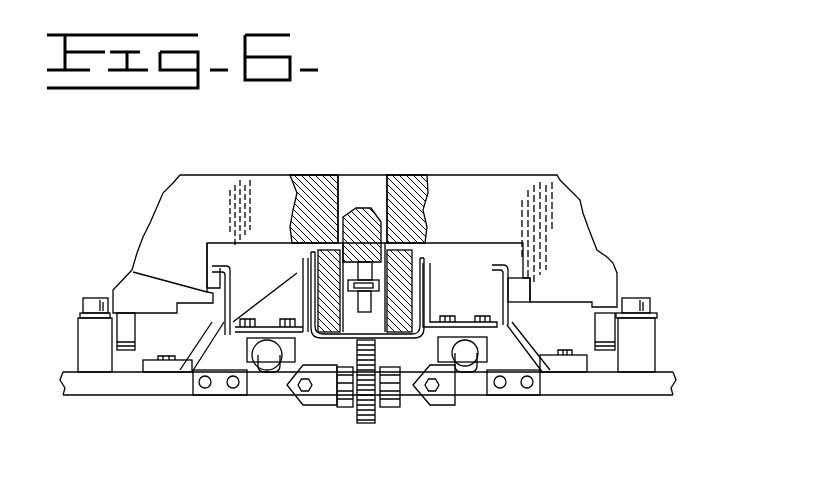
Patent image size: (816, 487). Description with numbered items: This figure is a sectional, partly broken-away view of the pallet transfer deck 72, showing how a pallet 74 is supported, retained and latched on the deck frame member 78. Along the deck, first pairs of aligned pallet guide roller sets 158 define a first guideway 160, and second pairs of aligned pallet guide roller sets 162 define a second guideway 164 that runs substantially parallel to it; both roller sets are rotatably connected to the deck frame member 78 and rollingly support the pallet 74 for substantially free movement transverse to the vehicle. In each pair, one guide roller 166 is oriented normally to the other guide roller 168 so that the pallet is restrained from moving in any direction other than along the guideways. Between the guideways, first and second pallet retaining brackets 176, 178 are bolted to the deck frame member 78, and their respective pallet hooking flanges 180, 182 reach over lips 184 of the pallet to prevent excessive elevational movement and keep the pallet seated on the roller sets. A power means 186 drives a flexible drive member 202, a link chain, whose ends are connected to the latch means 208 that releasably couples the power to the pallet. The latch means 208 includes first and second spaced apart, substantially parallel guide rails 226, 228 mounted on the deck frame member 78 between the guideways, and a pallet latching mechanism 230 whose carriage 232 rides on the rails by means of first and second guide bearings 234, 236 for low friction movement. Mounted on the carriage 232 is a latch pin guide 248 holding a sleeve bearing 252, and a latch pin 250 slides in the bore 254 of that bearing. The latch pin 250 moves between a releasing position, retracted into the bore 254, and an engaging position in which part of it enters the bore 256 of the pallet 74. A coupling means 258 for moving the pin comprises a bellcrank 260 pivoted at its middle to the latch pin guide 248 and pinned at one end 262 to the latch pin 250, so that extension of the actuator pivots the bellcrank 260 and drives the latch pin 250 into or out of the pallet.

The pallet transfer deck 72 is at (45, 327).
The pallet 74 is at (557, 192).
The deck frame member 78 is at (663, 383).
The first pairs of aligned pallet guide roller sets 158 is at (655, 347).
The first guideway 160 is at (650, 286).
The second pairs of aligned pallet guide roller sets 162 is at (122, 303).
The second guideway 164 is at (90, 335).
The guide roller 166 is at (86, 300).
The guide roller 168 is at (127, 332).
The first pallet retaining bracket 176 is at (505, 292).
The second pallet retaining bracket 178 is at (231, 287).
The pallet hooking flange 180 is at (482, 283).
The pallet hooking flange 182 is at (213, 317).
The lips 184 is at (203, 283).
The power means 186 is at (360, 426).
The flexible drive member 202 is at (368, 412).
The latch means 208 is at (438, 112).
The first guide rail 226 is at (466, 367).
The second guide rail 228 is at (265, 395).
The pallet latching mechanism 230 is at (376, 184).
The carriage 232 is at (448, 275).
The first guide bearing 234 is at (448, 277).
The second guide bearing 236 is at (200, 387).
The latch pin guide 248 is at (400, 260).
The latch pin 250 is at (353, 217).
The sleeve bearing 252 is at (338, 330).
The bore 254 is at (372, 320).
The bore 256 is at (338, 212).
The means for coupling 258 is at (333, 277).
The bellcrank 260 is at (380, 340).
The end 262 is at (366, 300).